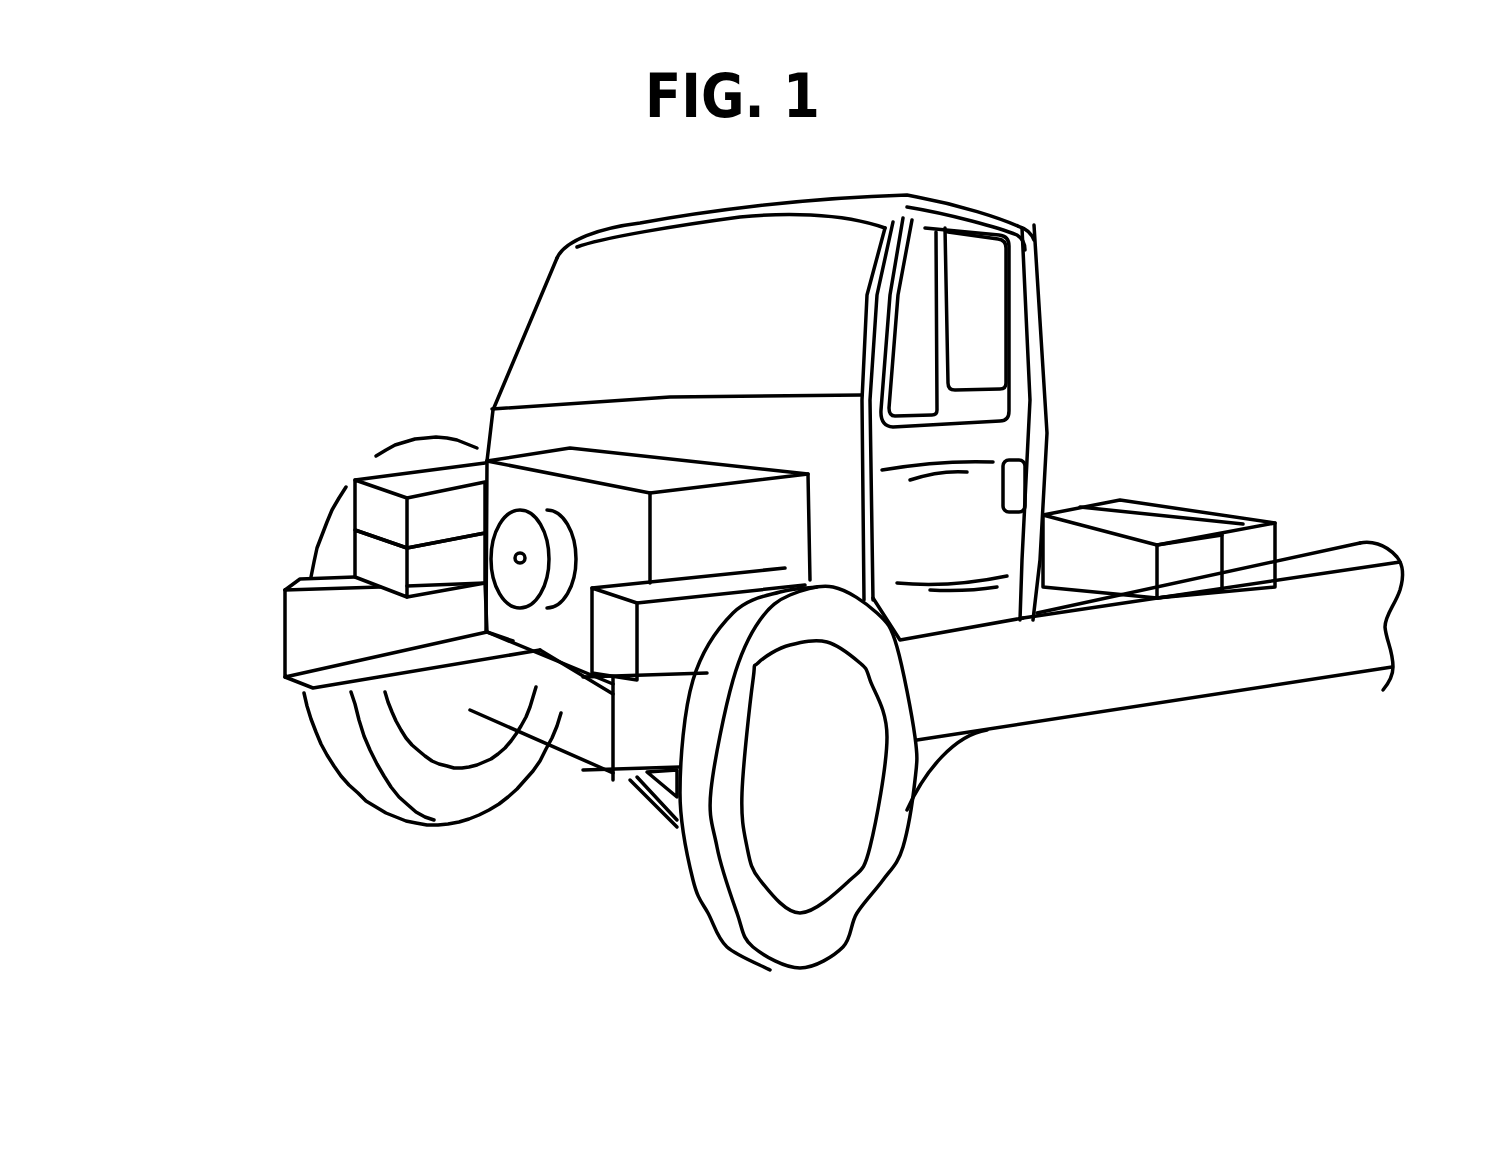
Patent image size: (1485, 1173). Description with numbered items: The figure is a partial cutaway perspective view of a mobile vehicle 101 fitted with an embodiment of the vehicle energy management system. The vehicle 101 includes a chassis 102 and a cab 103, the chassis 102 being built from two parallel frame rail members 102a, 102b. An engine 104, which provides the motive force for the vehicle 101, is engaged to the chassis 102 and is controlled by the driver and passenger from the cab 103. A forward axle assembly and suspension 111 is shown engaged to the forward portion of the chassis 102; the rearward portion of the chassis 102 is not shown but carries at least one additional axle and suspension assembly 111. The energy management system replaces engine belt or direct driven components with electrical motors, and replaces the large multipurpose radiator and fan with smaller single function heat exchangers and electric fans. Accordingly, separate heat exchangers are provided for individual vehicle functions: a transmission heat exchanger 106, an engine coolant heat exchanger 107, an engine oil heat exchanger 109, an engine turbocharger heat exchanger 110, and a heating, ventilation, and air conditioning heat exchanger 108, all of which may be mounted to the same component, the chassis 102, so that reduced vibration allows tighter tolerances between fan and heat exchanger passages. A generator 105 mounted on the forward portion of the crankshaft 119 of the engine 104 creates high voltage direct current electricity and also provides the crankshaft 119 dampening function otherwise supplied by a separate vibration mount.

The vehicle 101 is at (1337, 568).
The chassis 102 is at (1193, 697).
The frame rail member 102a is at (1062, 678).
The frame rail member 102b is at (325, 642).
The cab 103 is at (1027, 228).
The engine 104 is at (513, 452).
The generator 105 is at (508, 508).
The transmission heat exchanger 106 is at (1183, 568).
The engine coolant heat exchanger 107 is at (660, 635).
The HVAC heat exchanger 108 is at (1247, 560).
The engine oil heat exchanger 109 is at (383, 563).
The engine turbocharger heat exchanger 110 is at (380, 513).
The forward axle assembly and suspension 111 is at (470, 712).
The crankshaft 119 is at (521, 566).